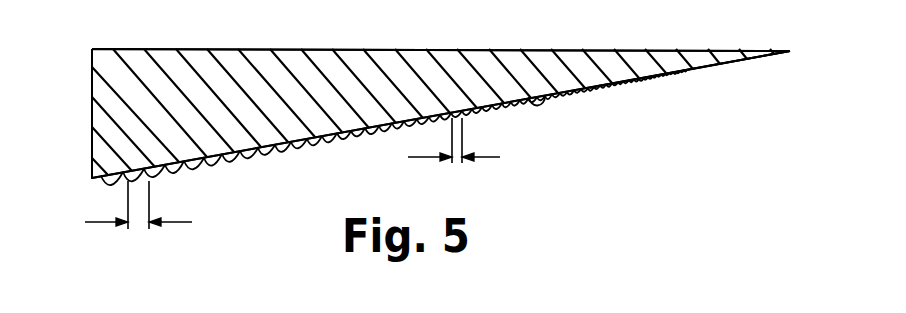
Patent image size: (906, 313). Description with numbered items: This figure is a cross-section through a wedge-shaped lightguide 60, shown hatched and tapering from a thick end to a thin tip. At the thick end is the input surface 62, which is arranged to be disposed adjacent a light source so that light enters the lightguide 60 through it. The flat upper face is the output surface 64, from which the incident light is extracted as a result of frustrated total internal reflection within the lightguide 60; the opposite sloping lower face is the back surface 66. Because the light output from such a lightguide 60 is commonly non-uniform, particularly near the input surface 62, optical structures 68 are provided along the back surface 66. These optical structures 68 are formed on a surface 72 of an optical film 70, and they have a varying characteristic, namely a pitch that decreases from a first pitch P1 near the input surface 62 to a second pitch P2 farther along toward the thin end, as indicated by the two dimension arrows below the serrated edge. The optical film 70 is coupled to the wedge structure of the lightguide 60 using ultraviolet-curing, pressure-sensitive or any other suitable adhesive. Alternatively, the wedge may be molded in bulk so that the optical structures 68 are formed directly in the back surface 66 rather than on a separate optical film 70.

The lightguide 60 is at (638, 37).
The input surface 62 is at (92, 110).
The output surface 64 is at (380, 50).
The back surface 66 is at (551, 92).
The optical structures 68 is at (214, 157).
The optical film 70 is at (563, 93).
The surface of optical film 72 is at (592, 88).
The first pitch P1 is at (180, 222).
The second pitch P2 is at (490, 158).